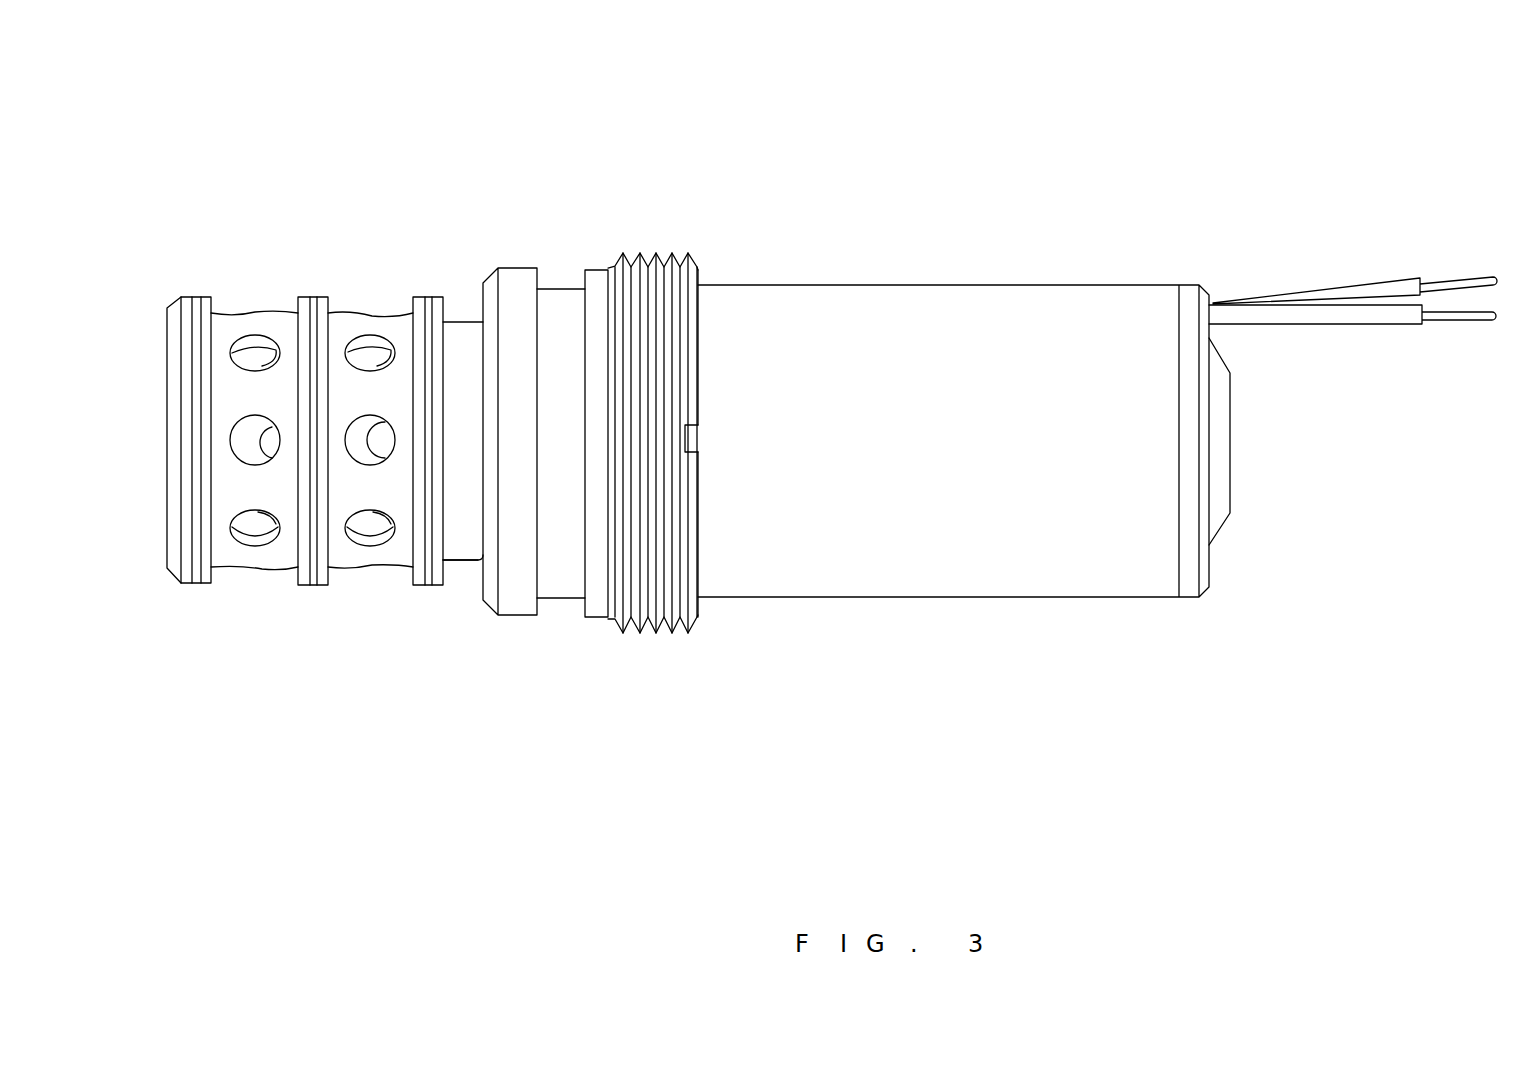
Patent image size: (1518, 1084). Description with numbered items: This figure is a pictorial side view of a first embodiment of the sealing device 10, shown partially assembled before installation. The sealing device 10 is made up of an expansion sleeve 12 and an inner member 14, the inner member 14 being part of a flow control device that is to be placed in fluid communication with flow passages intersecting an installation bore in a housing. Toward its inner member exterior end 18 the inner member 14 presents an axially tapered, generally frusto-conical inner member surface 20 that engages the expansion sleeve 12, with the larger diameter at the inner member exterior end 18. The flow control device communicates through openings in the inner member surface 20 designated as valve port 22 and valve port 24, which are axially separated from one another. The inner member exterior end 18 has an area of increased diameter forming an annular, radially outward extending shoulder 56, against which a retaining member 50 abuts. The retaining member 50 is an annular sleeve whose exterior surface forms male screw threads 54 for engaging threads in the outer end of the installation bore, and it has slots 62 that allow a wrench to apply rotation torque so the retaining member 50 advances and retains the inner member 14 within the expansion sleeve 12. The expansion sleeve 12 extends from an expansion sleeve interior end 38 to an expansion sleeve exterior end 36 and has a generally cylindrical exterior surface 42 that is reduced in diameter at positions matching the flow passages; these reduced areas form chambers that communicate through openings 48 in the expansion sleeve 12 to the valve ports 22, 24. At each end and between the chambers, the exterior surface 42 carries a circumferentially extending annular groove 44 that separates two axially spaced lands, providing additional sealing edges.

The sealing device 10 is at (805, 154).
The expansion sleeve 12 is at (338, 315).
The inner member 14 is at (360, 352).
The inner member exterior end 18 is at (466, 333).
The inner member surface 20 is at (250, 358).
The valve port 22 is at (272, 526).
The valve port 24 is at (384, 527).
The expansion sleeve exterior end 36 is at (442, 570).
The expansion sleeve interior end 38 is at (167, 565).
The exterior surface 42 is at (322, 585).
The annular groove 44 is at (428, 585).
The openings 48 is at (247, 538).
The retaining member 50 is at (700, 266).
The male screw threads 54 is at (645, 262).
The shoulder 56 is at (537, 268).
The slots 62 is at (692, 443).